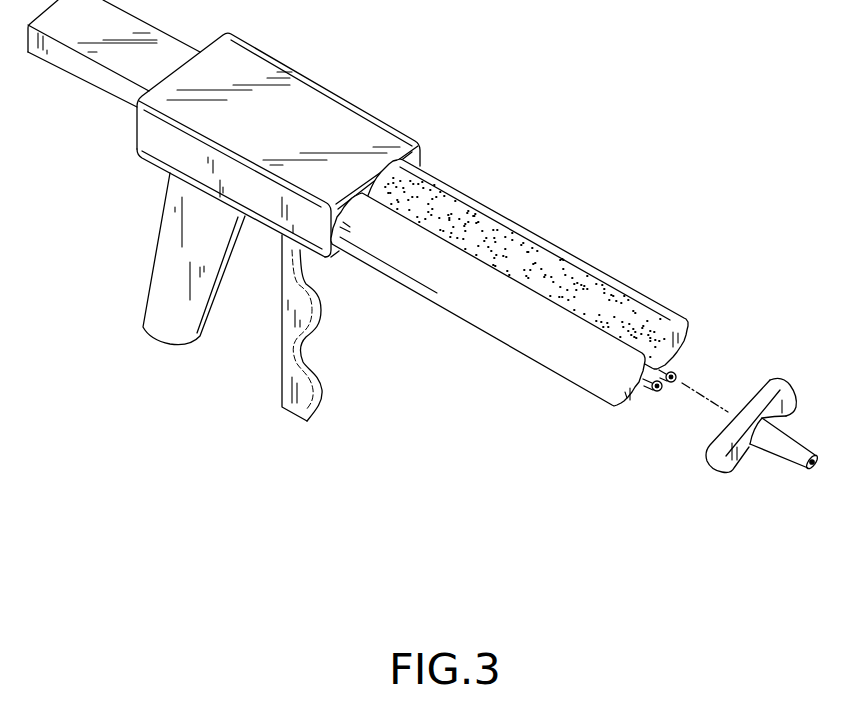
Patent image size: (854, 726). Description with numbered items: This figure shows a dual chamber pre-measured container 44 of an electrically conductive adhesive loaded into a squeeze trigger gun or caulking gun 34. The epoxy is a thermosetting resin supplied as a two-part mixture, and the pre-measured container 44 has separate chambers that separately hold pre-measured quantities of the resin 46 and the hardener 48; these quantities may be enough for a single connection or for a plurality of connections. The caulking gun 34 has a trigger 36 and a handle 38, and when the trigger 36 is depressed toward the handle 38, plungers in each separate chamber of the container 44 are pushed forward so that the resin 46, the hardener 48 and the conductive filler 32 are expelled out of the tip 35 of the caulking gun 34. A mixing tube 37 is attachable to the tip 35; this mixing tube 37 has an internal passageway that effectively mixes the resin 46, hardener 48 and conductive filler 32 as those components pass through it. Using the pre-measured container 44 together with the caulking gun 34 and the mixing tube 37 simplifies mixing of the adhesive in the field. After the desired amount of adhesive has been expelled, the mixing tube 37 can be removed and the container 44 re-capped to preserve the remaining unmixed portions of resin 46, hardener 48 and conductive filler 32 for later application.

The conductive filler 32 is at (452, 196).
The caulking gun 34 is at (126, 160).
The tip 35 is at (675, 380).
The trigger 36 is at (315, 402).
The mixing tube 37 is at (795, 436).
The handle 38 is at (175, 332).
The pre-measured container 44 is at (560, 238).
The resin 46 is at (527, 333).
The hardener 48 is at (632, 308).